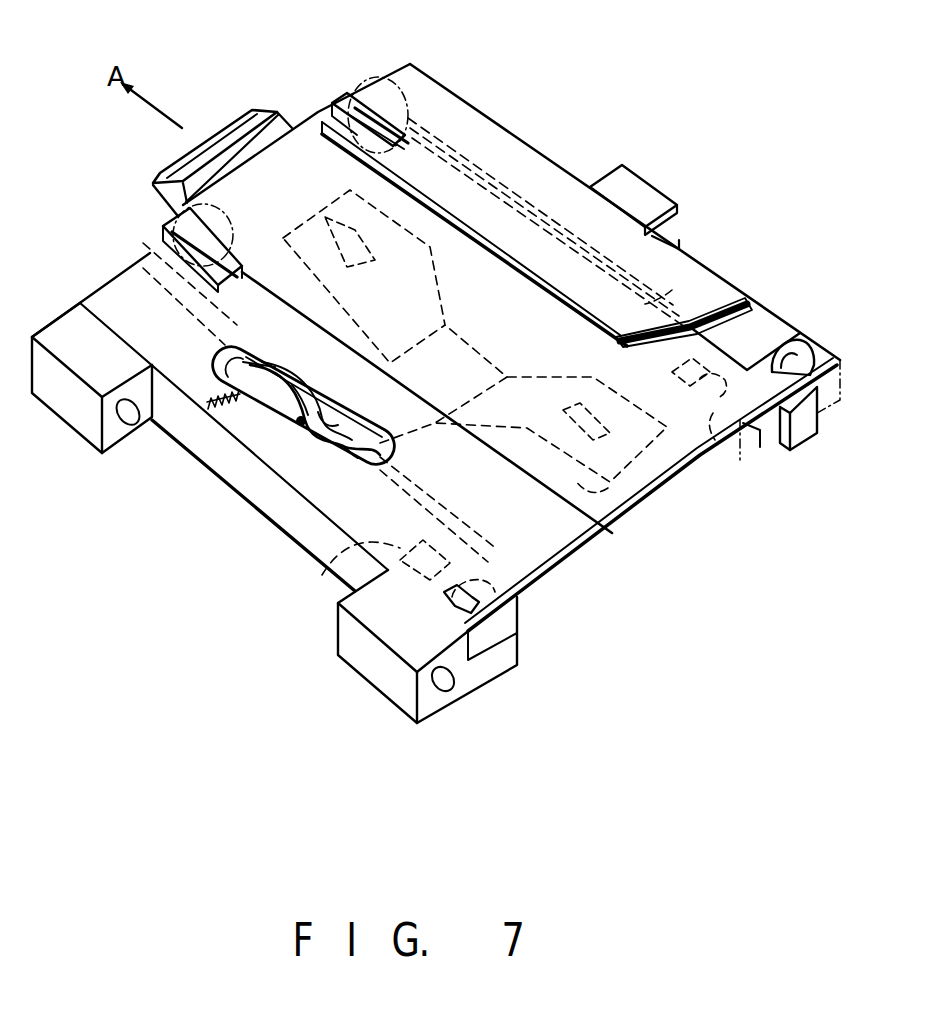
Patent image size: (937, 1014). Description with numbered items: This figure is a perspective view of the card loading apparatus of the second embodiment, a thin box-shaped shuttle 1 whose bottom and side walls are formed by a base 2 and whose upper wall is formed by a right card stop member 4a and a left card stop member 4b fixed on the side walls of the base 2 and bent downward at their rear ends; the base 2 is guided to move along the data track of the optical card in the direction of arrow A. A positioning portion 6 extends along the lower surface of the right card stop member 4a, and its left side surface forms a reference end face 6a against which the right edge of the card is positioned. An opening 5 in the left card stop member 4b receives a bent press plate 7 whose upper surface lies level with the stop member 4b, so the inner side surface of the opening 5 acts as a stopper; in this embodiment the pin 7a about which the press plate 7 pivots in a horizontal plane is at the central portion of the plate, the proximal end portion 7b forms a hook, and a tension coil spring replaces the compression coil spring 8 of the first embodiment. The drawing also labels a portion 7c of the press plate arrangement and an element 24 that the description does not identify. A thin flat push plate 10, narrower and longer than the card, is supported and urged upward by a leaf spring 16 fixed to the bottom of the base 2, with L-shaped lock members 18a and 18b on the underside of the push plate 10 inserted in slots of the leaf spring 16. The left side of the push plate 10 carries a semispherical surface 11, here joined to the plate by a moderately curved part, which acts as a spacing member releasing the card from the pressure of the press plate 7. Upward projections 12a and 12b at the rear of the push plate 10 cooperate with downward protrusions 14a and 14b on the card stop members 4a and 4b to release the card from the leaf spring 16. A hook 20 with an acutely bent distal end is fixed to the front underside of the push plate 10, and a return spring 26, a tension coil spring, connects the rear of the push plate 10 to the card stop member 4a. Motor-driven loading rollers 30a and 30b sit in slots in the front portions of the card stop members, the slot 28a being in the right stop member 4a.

The shuttle 1 is at (453, 366).
The base 2 is at (338, 645).
The right card stop member 4a is at (428, 82).
The left card stop member 4b is at (120, 270).
The opening 5 is at (366, 426).
The positioning portion 6 is at (750, 324).
The reference end face 6a is at (672, 290).
The press plate 7 is at (245, 388).
The pin 7a is at (292, 385).
The proximal end portion 7b is at (327, 410).
The contact member top portion 7c is at (258, 350).
The compression coil spring 8 is at (237, 420).
The push plate 10 is at (683, 472).
The semispherical surface 11 is at (350, 448).
The upward projection 12a is at (810, 343).
The upward projection 12b is at (493, 571).
The downward protrusion 14a is at (752, 318).
The downward protrusion 14b is at (330, 573).
The leaf spring 16 is at (608, 488).
The L-shaped lock member 18a is at (357, 262).
The L-shaped lock member 18b is at (568, 440).
The hook 20 is at (277, 110).
The retainer 24 is at (724, 394).
The return spring 26 is at (713, 413).
The slot 28a is at (447, 150).
The loading roller 30a is at (373, 74).
The loading roller 30b is at (167, 222).